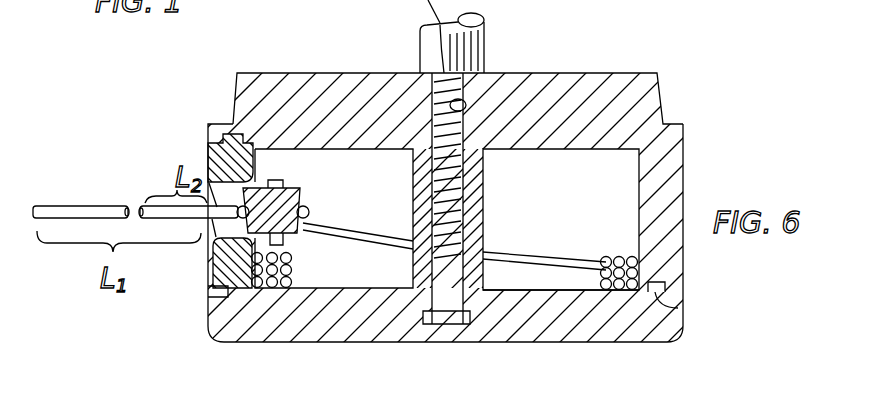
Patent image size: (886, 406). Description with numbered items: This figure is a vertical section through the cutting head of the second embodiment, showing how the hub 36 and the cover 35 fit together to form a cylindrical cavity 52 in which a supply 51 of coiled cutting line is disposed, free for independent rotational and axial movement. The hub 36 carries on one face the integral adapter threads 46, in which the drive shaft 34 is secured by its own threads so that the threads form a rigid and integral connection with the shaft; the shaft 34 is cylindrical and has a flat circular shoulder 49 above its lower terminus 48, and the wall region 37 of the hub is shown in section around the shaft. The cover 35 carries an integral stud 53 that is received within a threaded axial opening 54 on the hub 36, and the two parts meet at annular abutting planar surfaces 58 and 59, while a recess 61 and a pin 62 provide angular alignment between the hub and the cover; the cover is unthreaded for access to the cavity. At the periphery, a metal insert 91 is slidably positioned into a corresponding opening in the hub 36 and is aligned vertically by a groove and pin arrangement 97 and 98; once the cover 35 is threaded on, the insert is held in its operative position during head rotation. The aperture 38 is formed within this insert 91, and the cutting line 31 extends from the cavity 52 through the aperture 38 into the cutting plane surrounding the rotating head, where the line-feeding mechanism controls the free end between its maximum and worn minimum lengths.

The cutting line 31 is at (62, 208).
The drive shaft 34 is at (470, 40).
The cover 35 is at (683, 330).
The hub 36 is at (680, 157).
The housing top wall 37 is at (650, 88).
The aperture 38 is at (215, 232).
The adapter threads 46 is at (467, 112).
The lower terminus 48 is at (443, 165).
The flat circular shoulder 49 is at (462, 104).
The supply of coiled cutting line 51 is at (622, 258).
The cylindrical cavity 52 is at (578, 182).
The stud 53 is at (443, 311).
The threaded axial opening 54 is at (458, 215).
The annular abutting planar surface 58 is at (643, 290).
The annular abutting planar surface 59 is at (672, 290).
The recess 61 is at (682, 307).
The pin 62 is at (220, 306).
The metal insert 91 is at (220, 260).
The groove 97 is at (213, 163).
The pin 98 is at (207, 280).